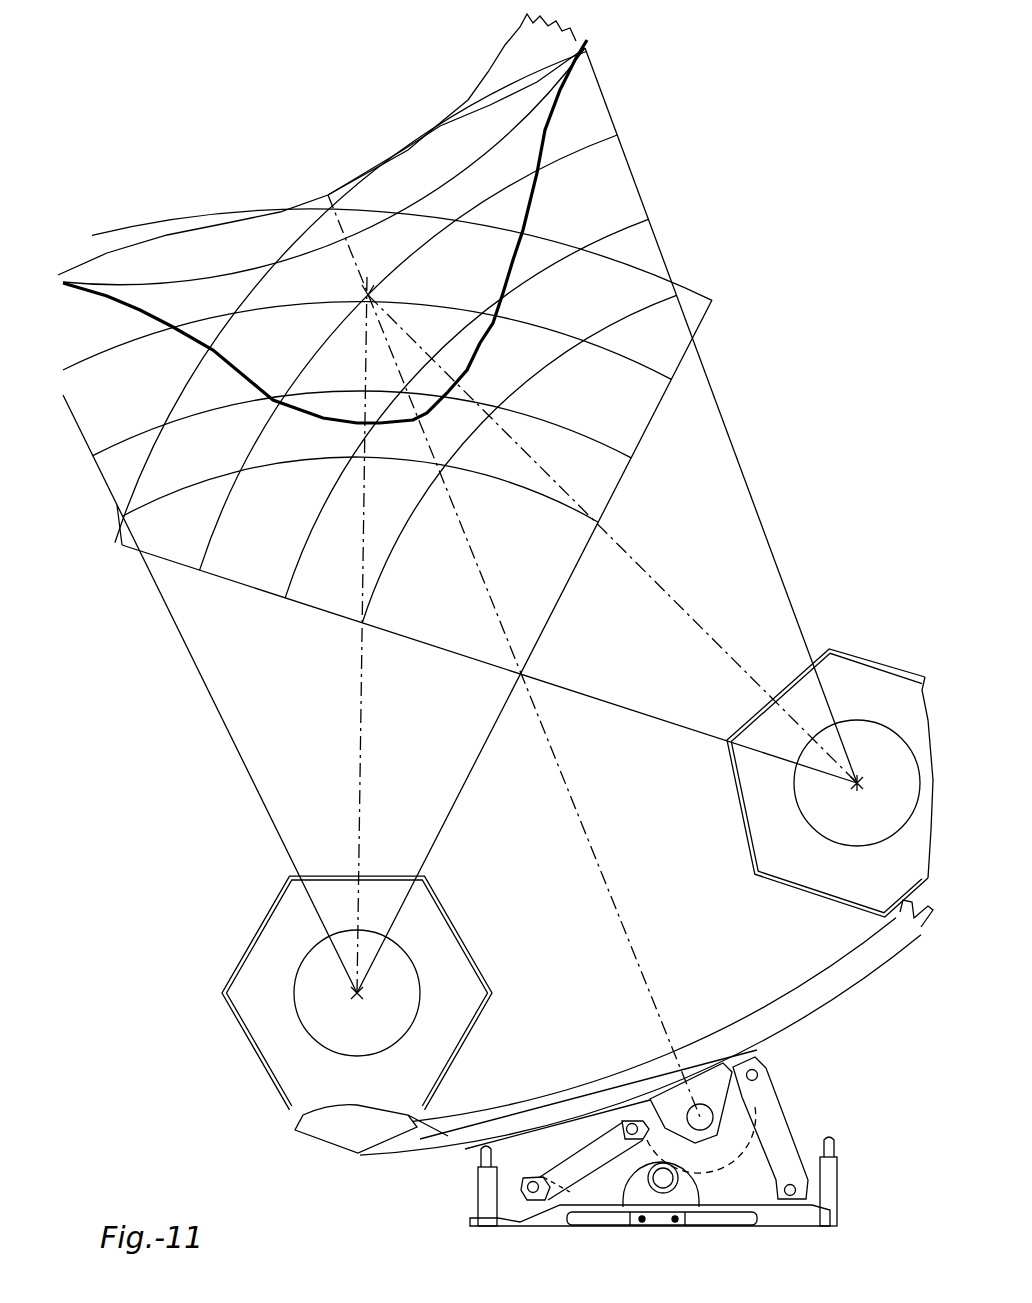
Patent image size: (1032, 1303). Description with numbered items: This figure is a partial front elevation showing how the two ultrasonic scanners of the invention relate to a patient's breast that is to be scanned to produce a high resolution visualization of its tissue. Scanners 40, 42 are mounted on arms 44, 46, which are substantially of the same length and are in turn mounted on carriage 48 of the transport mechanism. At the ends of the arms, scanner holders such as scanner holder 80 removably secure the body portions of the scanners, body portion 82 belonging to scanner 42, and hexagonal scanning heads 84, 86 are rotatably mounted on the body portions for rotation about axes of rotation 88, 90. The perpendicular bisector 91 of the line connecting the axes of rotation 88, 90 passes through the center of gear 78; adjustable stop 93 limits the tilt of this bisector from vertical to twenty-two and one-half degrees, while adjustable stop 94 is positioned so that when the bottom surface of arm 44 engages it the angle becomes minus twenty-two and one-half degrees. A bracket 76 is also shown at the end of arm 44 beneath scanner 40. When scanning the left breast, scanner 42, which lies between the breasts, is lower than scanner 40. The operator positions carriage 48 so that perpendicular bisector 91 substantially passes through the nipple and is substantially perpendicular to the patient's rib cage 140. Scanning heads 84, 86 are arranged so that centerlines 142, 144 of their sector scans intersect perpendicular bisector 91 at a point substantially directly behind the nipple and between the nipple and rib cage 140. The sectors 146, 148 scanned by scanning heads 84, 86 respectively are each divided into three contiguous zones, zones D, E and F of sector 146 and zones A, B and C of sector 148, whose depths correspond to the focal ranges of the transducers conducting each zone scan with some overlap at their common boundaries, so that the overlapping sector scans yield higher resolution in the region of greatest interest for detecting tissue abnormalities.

The rib cage 140 is at (505, 46).
The centerline of sector scan 142 is at (712, 634).
The centerline of sector scan 144 is at (363, 792).
The sector 146 is at (613, 123).
The sector 148 is at (118, 508).
The perpendicular bisector 91 is at (561, 766).
The scanner 40 is at (783, 777).
The scanner 42 is at (377, 995).
The arm 44 is at (753, 1013).
The arm 46 is at (578, 1090).
The carriage 48 is at (490, 1222).
The bracket 76 is at (900, 913).
The gear 78 is at (437, 1111).
The scanner holder 80 is at (740, 826).
The body portion 82 is at (466, 1050).
The hexagonal scanning head 84 is at (888, 622).
The hexagonal scanning head 86 is at (493, 990).
The axis of rotation 88 is at (862, 778).
The axis of rotation 90 is at (360, 995).
The adjustable stop 93 is at (478, 1180).
The adjustable stop 94 is at (832, 1208).